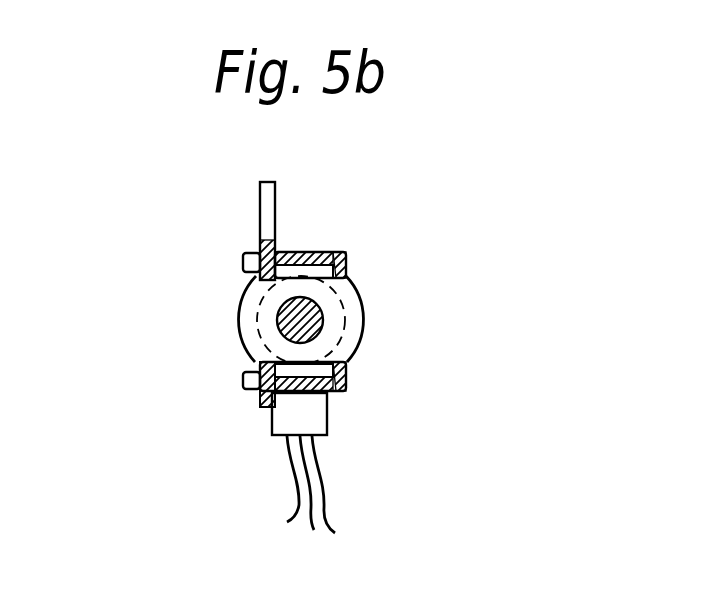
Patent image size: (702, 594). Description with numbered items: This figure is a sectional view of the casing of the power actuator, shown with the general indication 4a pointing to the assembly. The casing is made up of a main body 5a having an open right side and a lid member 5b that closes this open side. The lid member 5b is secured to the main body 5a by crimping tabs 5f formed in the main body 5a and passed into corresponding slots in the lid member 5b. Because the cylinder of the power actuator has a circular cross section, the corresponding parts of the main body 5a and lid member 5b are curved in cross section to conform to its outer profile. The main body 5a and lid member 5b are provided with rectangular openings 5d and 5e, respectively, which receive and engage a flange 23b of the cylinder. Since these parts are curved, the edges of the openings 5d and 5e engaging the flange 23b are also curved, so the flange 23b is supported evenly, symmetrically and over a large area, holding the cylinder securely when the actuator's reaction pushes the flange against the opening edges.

The sensor assembly 4a is at (431, 254).
The flange 23b is at (240, 332).
The main body 5a is at (350, 262).
The lid member 5b is at (263, 400).
The rectangular opening 5d is at (348, 358).
The rectangular opening 5e is at (246, 298).
The crimping tabs 5f is at (243, 262).